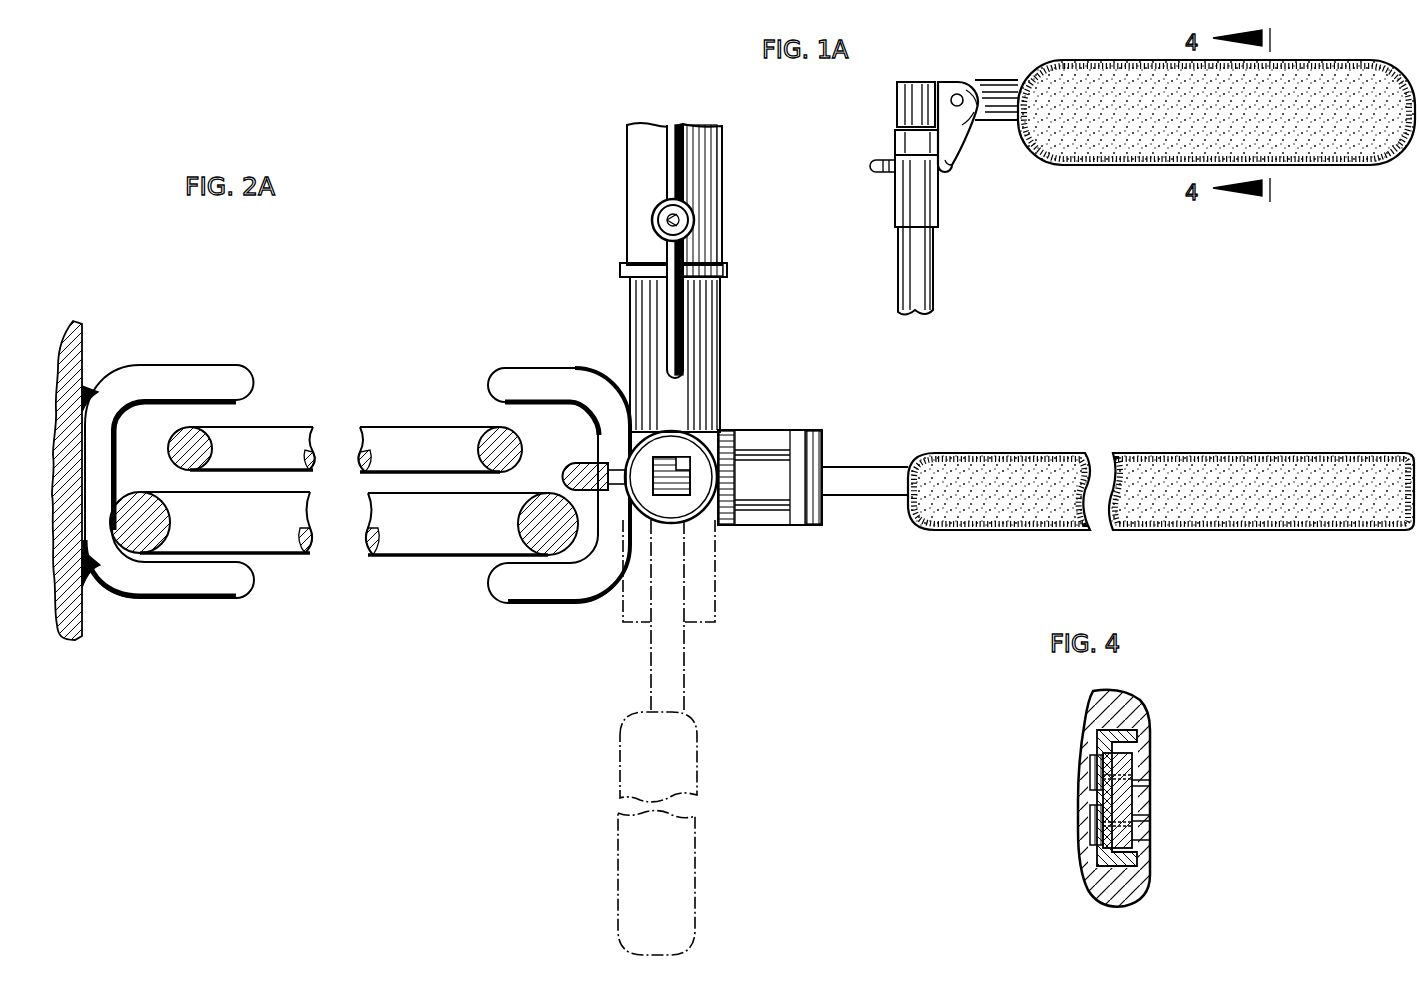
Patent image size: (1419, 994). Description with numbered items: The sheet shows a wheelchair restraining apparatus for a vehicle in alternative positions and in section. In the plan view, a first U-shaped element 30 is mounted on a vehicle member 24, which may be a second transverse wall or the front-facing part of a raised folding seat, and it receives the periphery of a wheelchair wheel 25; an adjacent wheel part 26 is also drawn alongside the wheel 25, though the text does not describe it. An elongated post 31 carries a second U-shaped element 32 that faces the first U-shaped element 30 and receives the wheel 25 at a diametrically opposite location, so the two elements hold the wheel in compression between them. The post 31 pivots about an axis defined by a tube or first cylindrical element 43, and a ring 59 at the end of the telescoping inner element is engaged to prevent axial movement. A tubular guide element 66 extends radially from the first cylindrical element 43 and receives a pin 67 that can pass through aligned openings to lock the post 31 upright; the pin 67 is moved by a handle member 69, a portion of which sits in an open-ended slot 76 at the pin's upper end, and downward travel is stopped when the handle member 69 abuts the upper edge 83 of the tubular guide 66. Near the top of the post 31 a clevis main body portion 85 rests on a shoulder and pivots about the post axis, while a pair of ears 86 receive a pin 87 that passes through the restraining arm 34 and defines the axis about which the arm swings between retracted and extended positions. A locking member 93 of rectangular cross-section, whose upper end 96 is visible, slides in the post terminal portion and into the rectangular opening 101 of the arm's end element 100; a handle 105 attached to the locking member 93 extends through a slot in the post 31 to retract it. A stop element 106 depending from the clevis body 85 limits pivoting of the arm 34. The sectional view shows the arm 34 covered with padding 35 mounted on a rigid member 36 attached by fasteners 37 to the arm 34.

In FIG. 2A, the member 24 is at (86, 355).
In FIG. 2A, the wheelchair wheel 25 is at (272, 545).
In FIG. 2A, the upper rail 26 is at (300, 428).
In FIG. 2A, the first U-shaped element 30 is at (235, 370).
In FIG. 2A, the post 31 is at (700, 386).
In FIG. 1A, the post 31 is at (925, 282).
In FIG. 2A, the second U-shaped element 32 is at (505, 585).
In FIG. 2A, the restraining arm 34 is at (888, 468).
In FIG. 1A, the restraining arm 34 is at (1000, 90).
In FIG. 4, the restraining arm 34 is at (1150, 800).
In FIG. 2A, the padding 35 is at (1022, 502).
In FIG. 1A, the padding 35 is at (1166, 110).
In FIG. 4, the padding 35 is at (1100, 718).
In FIG. 4, the rigid member 36 is at (1100, 748).
In FIG. 4, the fasteners 37 is at (1090, 823).
In FIG. 2A, the first cylindrical element 43 is at (723, 195).
In FIG. 2A, the ring 59 is at (728, 275).
In FIG. 2A, the tubular guide element 66 is at (660, 228).
In FIG. 2A, the pin 67 is at (665, 218).
In FIG. 2A, the handle member 69 is at (673, 318).
In FIG. 2A, the open-ended slot 76 is at (678, 220).
In FIG. 2A, the upper edge 83 is at (690, 236).
In FIG. 2A, the main body portion 85 is at (720, 525).
In FIG. 1A, the main body portion 85 is at (897, 145).
In FIG. 2A, the ears 86 is at (795, 500).
In FIG. 1A, the ears 86 is at (957, 97).
In FIG. 1A, the pin 87 is at (970, 125).
In FIG. 2A, the locking member 93 is at (712, 505).
In FIG. 2A, the upper end 96 is at (672, 490).
In FIG. 2A, the end element 100 is at (705, 450).
In FIG. 1A, the end element 100 is at (905, 100).
In FIG. 2A, the rectangular opening 101 is at (674, 460).
In FIG. 2A, the handle 105 is at (580, 464).
In FIG. 1A, the handle 105 is at (885, 166).
In FIG. 1A, the stop element 106 is at (950, 165).